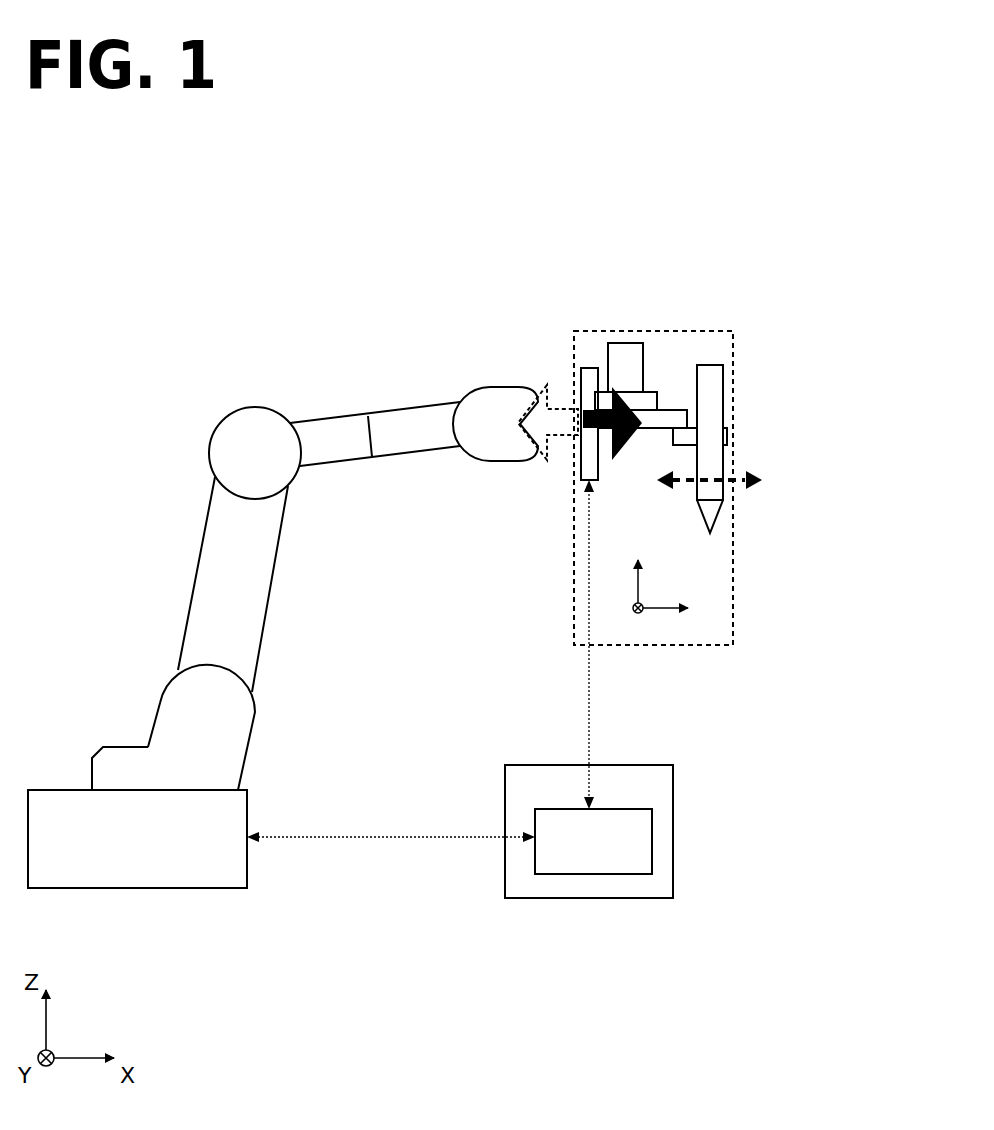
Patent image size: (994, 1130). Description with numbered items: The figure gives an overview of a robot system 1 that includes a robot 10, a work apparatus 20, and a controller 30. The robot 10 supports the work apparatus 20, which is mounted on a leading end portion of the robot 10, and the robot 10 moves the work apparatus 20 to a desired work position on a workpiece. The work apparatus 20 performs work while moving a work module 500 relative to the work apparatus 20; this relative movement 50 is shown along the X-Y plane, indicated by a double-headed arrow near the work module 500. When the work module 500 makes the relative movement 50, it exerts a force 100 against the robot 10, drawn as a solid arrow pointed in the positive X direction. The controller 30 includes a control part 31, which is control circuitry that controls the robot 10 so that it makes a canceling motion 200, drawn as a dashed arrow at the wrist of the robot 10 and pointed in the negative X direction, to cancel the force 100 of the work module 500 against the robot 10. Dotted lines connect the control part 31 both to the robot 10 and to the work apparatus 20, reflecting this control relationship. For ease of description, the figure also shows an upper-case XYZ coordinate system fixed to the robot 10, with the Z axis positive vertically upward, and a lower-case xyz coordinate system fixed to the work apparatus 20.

The robot system 1 is at (286, 315).
The robot 10 is at (196, 526).
The work apparatus 20 is at (728, 323).
The controller 30 is at (638, 765).
The control part 31 is at (605, 809).
The relative movement 50 is at (713, 483).
The force 100 is at (625, 447).
The canceling motion 200 is at (528, 398).
The work module 500 is at (716, 462).